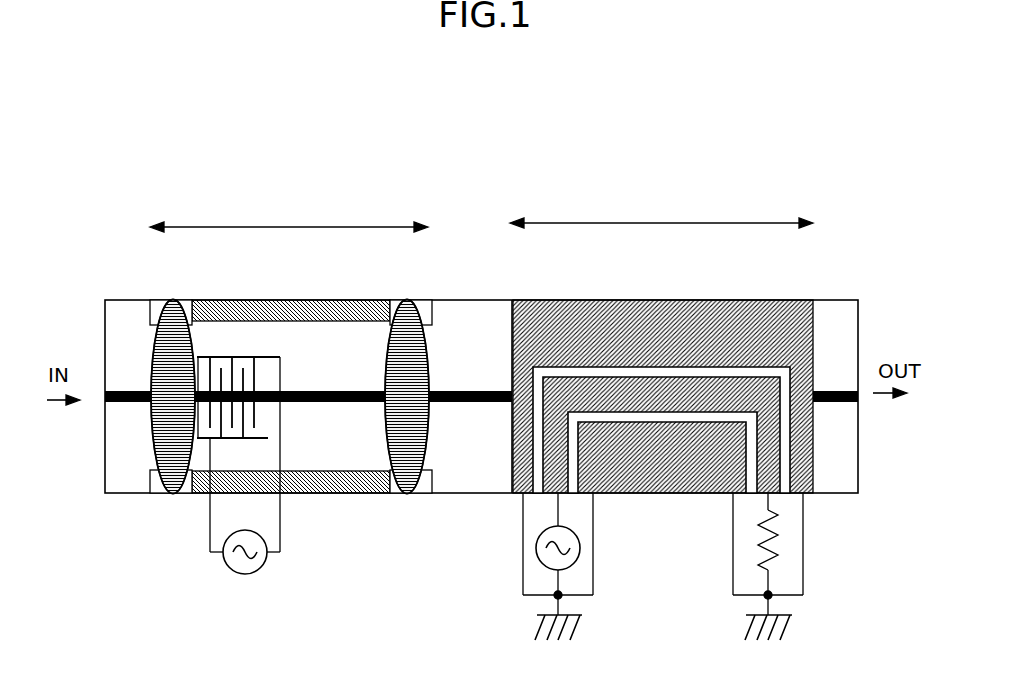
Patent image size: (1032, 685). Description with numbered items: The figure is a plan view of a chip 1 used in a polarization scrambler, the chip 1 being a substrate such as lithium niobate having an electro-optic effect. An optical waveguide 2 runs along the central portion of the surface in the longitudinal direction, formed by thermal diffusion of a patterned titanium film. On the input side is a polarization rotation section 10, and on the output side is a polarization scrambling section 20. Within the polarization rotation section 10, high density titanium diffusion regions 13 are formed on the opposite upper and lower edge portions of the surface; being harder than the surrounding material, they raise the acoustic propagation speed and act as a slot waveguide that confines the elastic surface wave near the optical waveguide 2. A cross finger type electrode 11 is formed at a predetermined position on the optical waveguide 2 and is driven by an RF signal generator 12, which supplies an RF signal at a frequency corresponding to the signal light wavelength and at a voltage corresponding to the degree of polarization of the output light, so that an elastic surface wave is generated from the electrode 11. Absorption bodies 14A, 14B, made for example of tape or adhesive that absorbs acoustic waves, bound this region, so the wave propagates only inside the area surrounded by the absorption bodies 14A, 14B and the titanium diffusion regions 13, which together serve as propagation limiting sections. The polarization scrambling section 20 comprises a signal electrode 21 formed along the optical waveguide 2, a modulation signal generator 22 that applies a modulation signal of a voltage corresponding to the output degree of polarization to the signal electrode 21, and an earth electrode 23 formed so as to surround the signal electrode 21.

The chip 1 is at (105, 300).
The optical waveguide 2 is at (105, 403).
The polarization rotation section 10 is at (275, 198).
The electrode 11 is at (288, 333).
The RF signal generator 12 is at (258, 565).
The high density titanium diffusion regions 13 is at (268, 300).
The absorption body 14A is at (171, 300).
The absorption body 14B is at (407, 300).
The polarization scrambling section 20 is at (682, 195).
The signal electrode 21 is at (756, 368).
The modulation signal generator 22 is at (535, 548).
The earth electrode 23 is at (533, 300).